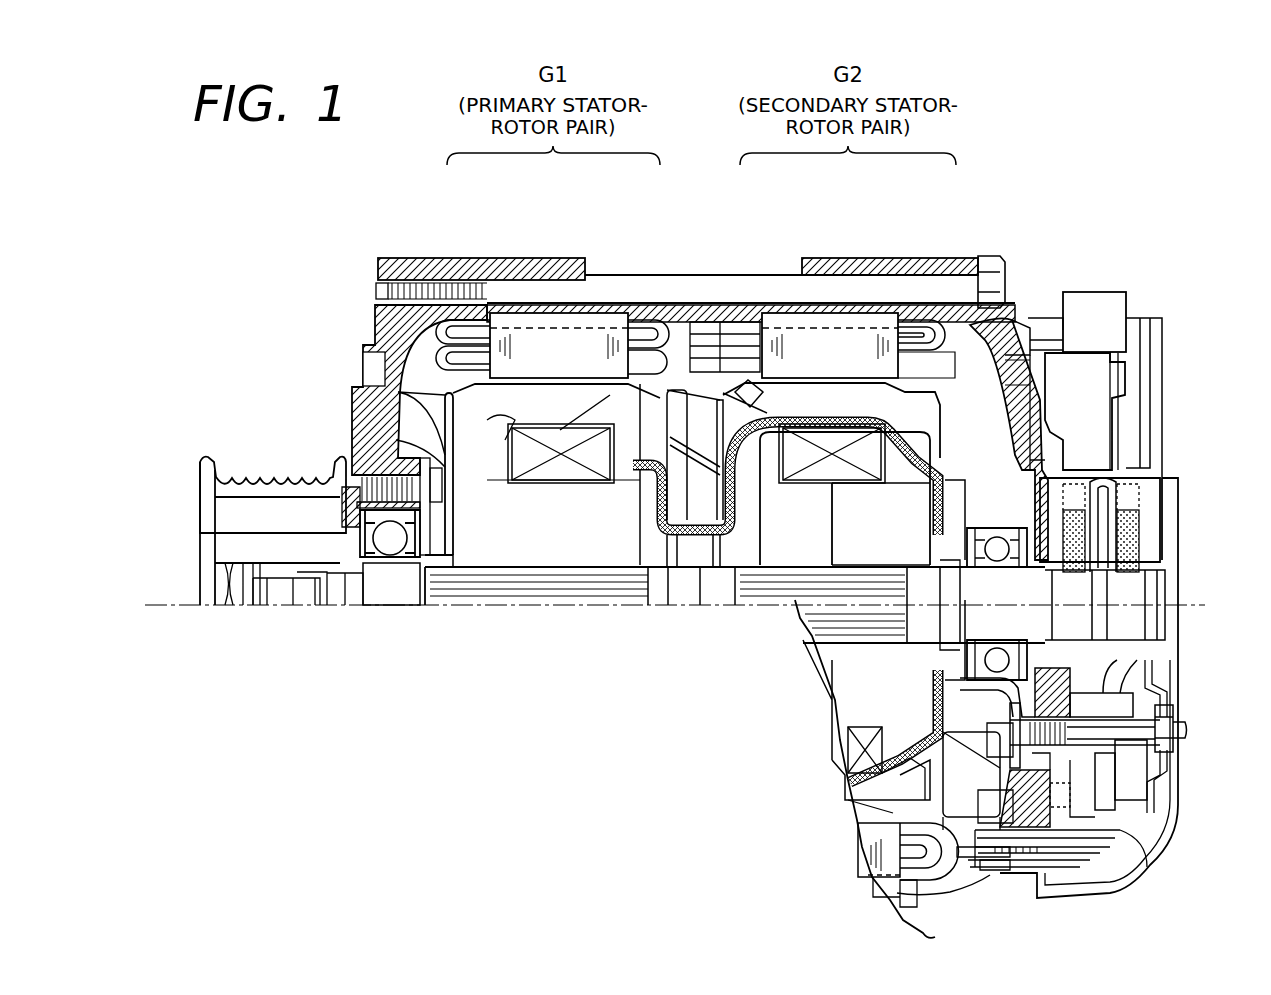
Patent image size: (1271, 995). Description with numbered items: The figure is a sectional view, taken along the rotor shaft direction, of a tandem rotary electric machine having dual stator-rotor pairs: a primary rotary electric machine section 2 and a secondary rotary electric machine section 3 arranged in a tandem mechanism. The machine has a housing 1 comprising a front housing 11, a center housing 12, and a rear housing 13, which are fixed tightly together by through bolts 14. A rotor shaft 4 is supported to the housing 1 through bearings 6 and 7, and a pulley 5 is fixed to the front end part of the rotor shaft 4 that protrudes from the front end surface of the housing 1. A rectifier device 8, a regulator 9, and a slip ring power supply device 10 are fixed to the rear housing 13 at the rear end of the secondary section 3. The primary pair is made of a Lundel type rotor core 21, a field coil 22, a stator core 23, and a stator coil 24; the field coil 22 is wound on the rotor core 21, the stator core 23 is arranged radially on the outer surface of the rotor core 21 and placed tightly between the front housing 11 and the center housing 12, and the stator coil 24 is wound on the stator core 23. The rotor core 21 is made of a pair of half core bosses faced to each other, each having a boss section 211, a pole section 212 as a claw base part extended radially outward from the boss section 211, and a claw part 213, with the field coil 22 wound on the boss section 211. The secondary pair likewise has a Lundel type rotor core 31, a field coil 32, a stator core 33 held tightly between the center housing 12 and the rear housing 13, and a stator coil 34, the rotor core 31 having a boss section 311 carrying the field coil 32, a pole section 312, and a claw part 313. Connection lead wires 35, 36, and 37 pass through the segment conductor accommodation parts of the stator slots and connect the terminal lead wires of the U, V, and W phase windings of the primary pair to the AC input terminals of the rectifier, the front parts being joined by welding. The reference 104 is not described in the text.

The housing 1 is at (433, 248).
The primary rotary electric machine section 2 is at (600, 296).
The secondary rotary electric machine section 3 is at (790, 296).
The rotor shaft 4 is at (350, 580).
The pulley 5 is at (228, 548).
The bearing 6 is at (402, 567).
The bearing 7 is at (987, 563).
The rectifier device 8 is at (1105, 785).
The regulator 9 is at (1090, 398).
The slip ring power supply device 10 is at (1140, 535).
The front housing 11 is at (373, 317).
The center housing 12 is at (670, 303).
The rear housing 13 is at (965, 300).
The through bolt 14 is at (850, 290).
The Lundel type rotor core 21 is at (540, 550).
The field coil 22 is at (588, 480).
The stator core 23 is at (585, 345).
The stator coil 24 is at (655, 330).
The Lundel type rotor core 31 is at (765, 540).
The field coil 32 is at (820, 470).
The stator core 33 is at (870, 345).
The stator coil 34 is at (920, 328).
The connection lead wire 35 is at (648, 470).
The connection lead wire 36 is at (693, 551).
The connection lead wire 37 is at (700, 400).
The air passage 104 is at (700, 350).
The boss section 211 is at (508, 530).
The pole section 212 is at (465, 480).
The claw part 213 is at (488, 418).
The boss section 311 is at (893, 537).
The pole section 312 is at (1012, 340).
The claw part 313 is at (810, 397).